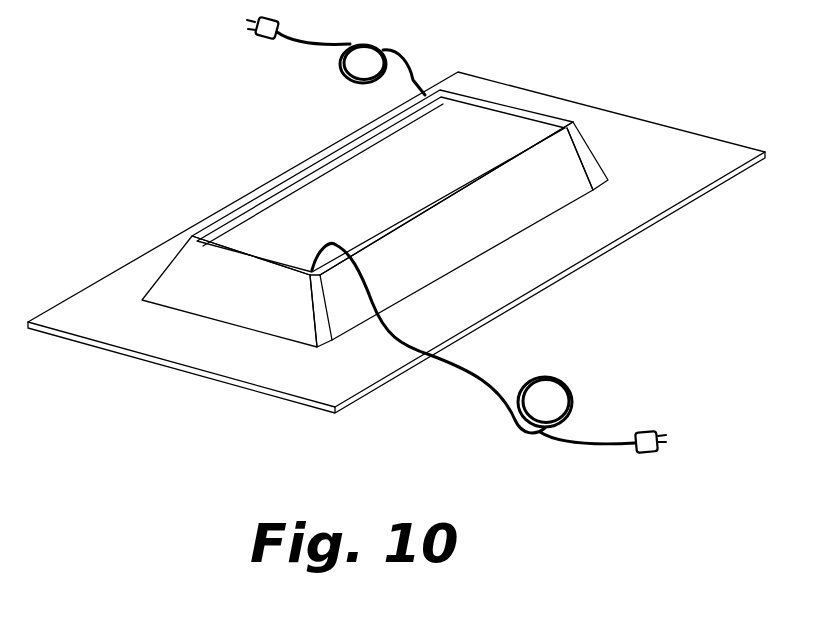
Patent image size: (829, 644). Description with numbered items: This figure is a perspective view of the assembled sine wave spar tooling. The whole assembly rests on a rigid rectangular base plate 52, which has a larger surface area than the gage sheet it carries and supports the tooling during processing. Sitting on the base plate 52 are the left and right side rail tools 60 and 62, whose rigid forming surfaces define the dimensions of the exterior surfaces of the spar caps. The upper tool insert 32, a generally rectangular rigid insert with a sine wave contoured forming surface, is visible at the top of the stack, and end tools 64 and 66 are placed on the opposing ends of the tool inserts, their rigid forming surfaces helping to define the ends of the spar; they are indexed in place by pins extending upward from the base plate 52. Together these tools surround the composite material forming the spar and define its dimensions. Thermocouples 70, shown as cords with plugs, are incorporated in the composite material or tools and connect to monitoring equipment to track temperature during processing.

The upper tool insert 32 is at (472, 133).
The base plate 52 is at (250, 368).
The left side rail tool 60 is at (402, 215).
The right side rail tool 62 is at (495, 220).
The end tool 64 is at (200, 293).
The end tool 66 is at (592, 164).
The thermocouple 70 is at (372, 45).